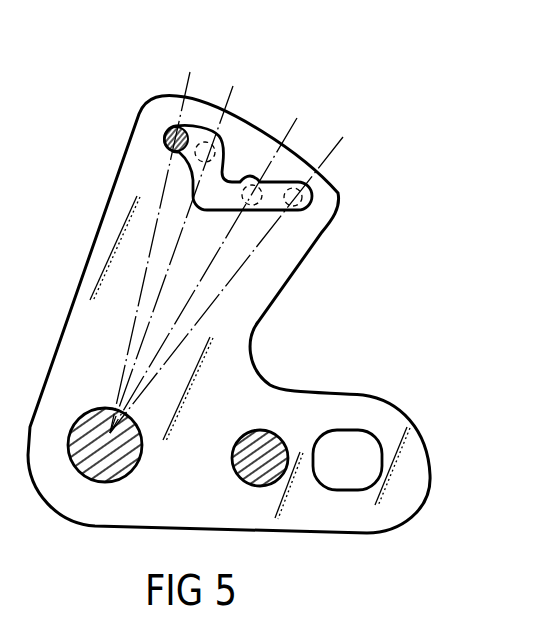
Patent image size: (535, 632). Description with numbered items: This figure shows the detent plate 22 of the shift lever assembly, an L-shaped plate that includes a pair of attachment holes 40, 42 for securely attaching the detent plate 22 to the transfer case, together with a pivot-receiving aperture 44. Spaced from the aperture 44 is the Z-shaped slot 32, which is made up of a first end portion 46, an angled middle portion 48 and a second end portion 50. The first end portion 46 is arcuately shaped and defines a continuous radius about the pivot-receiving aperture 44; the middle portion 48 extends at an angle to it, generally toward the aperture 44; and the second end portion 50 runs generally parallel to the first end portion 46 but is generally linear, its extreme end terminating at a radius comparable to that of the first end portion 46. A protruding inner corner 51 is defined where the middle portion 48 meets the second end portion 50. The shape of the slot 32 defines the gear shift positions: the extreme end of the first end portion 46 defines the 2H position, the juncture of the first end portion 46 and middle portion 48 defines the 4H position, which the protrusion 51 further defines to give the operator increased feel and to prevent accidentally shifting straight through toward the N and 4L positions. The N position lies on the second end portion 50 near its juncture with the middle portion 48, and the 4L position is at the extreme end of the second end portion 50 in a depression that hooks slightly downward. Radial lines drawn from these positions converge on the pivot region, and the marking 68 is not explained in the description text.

The detent plate 22 is at (266, 324).
The Z-shaped slot 32 is at (230, 215).
The attachment hole 40 is at (261, 431).
The attachment hole 42 is at (345, 430).
The pivot-receiving aperture 44 is at (131, 471).
The first end portion 46 is at (195, 127).
The angled middle portion 48 is at (207, 181).
The second end portion 50 is at (278, 199).
The protruding inner corner 51 is at (236, 170).
The pivot axis 68 is at (96, 462).
The 2H position 2H is at (157, 237).
The 4H position 4H is at (181, 244).
The N position N is at (210, 259).
The 4L position 4L is at (239, 271).